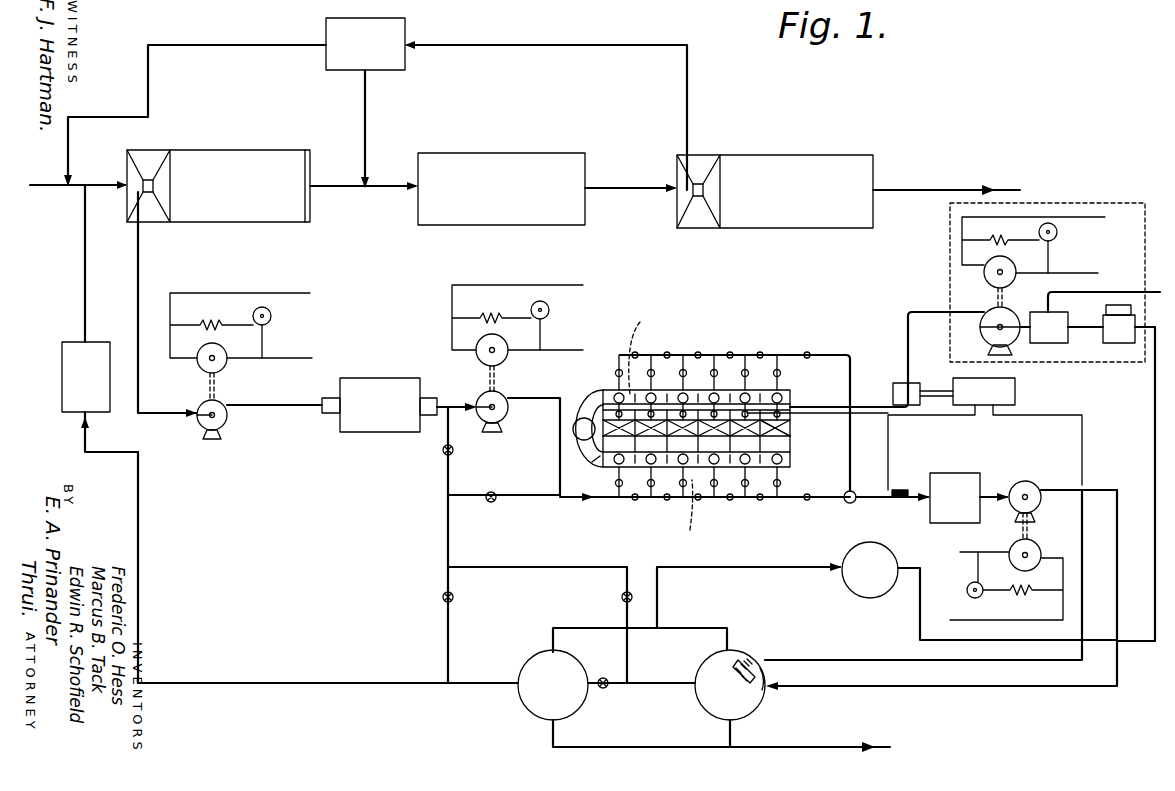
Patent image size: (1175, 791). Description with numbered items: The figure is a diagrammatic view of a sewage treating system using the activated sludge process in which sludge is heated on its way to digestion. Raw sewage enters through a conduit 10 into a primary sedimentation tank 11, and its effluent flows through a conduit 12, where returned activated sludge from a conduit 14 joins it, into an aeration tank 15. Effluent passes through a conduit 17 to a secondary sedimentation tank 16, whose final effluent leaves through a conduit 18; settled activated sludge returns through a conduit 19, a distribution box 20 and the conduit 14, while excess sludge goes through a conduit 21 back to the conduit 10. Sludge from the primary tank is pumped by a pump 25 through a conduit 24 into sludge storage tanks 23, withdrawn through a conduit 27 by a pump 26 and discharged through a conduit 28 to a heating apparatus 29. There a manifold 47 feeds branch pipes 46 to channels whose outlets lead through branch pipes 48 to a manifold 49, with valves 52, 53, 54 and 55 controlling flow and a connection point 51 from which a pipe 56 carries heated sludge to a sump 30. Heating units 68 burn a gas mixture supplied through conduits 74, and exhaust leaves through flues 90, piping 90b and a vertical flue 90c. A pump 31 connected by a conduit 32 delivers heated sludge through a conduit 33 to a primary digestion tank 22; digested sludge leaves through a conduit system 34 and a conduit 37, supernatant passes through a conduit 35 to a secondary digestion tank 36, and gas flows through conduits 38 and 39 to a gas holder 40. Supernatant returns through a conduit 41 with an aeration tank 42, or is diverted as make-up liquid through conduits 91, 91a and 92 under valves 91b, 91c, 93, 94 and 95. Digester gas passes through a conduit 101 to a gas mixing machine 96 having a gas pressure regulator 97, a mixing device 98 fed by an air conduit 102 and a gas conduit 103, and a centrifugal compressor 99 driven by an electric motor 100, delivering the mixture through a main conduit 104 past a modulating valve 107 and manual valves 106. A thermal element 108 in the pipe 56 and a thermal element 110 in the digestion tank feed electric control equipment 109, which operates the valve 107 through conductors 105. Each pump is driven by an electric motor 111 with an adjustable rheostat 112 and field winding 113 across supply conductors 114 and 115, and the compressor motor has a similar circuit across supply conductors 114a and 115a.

The conduit 10 is at (60, 186).
The primary sedimentation tank 11 is at (263, 150).
The conduit 12 is at (368, 190).
The conduit 14 is at (365, 104).
The aeration tank 15 is at (510, 153).
The secondary sedimentation tank 16 is at (796, 155).
The conduit 17 is at (640, 192).
The conduit 18 is at (935, 190).
The conduit 19 is at (618, 46).
The distribution box 20 is at (326, 26).
The conduit 21 is at (208, 46).
The primary digestion tank 22 is at (697, 710).
The sludge storage tanks 23 is at (378, 432).
The conduit 24 is at (140, 253).
The pump 25 is at (200, 403).
The pump 26 is at (509, 413).
The conduit 27 is at (462, 405).
The conduit 28 is at (558, 470).
The heating apparatus 29 is at (605, 385).
The sump 30 is at (956, 473).
The pump 31 is at (1028, 482).
The conduit 32 is at (992, 490).
The conduit 33 is at (1105, 485).
The conduit system 34 is at (805, 747).
The conduit 35 is at (658, 683).
The secondary digestion tank 36 is at (518, 708).
The conduit 37 is at (592, 747).
The conduit 38 is at (590, 628).
The conduit 39 is at (658, 595).
The gas holder 40 is at (850, 548).
The conduit 41 is at (268, 683).
The aeration tank 42 is at (62, 370).
The branch pipe 46 is at (748, 502).
The manifold 47 is at (716, 502).
The branch pipe 48 is at (762, 376).
The manifold 49 is at (793, 355).
The connection point 51 is at (853, 504).
The valves 52 is at (781, 480).
The valves 53 is at (796, 374).
The valve 54 is at (667, 502).
The valve 55 is at (698, 355).
The pipe 56 is at (900, 500).
The heating units 68 is at (797, 432).
The conduit 74 is at (790, 437).
The flues 90 is at (661, 430).
The piping 90b is at (596, 458).
The vertical flue 90c is at (573, 430).
The conduit 91 is at (448, 533).
The conduit 91a is at (540, 497).
The valve 91b is at (444, 454).
The valve 91c is at (491, 502).
The conduit 92 is at (562, 570).
The valve 93 is at (443, 598).
The valve 94 is at (622, 594).
The valve 95 is at (603, 678).
The gas mixing machine 96 is at (1118, 203).
The gas pressure regulator 97 is at (1128, 343).
The mixing device 98 is at (1062, 343).
The centrifugal compressor 99 is at (980, 329).
The electric motor 100 is at (984, 273).
The conduit 101 is at (1153, 590).
The conduit 102 is at (1120, 292).
The conduit 103 is at (1084, 327).
The main conduit 104 is at (905, 320).
The conductors 105 is at (928, 391).
The valve 106 is at (865, 413).
The modulating valve 107 is at (893, 388).
The thermal responsive element 108 is at (903, 490).
The electric control equipment 109 is at (1015, 393).
The thermal element 110 is at (752, 660).
The electric motor 111 is at (226, 365).
The adjustable rheostat 112 is at (271, 316).
The field winding 113 is at (212, 316).
The supply conductor 114 is at (305, 358).
The supply conductor 114a is at (1090, 273).
The supply conductor 115 is at (302, 293).
The supply conductor 115a is at (1070, 217).